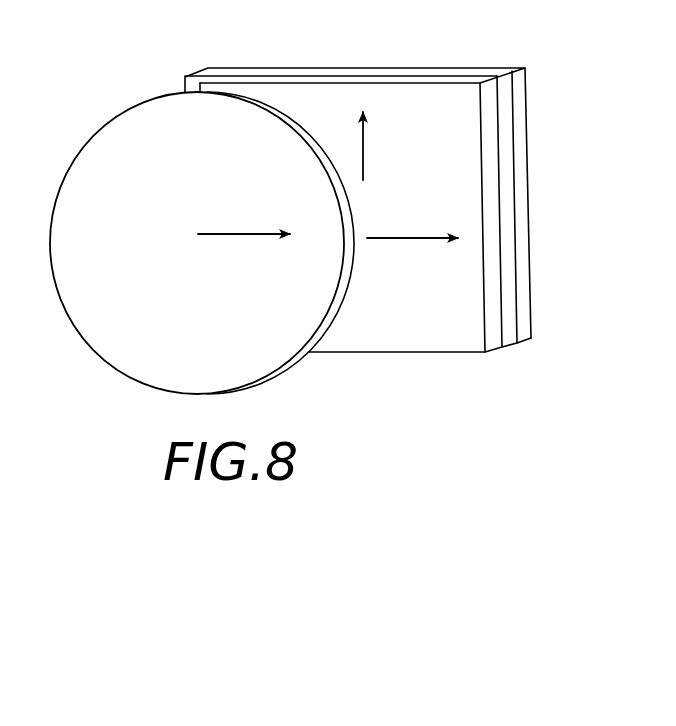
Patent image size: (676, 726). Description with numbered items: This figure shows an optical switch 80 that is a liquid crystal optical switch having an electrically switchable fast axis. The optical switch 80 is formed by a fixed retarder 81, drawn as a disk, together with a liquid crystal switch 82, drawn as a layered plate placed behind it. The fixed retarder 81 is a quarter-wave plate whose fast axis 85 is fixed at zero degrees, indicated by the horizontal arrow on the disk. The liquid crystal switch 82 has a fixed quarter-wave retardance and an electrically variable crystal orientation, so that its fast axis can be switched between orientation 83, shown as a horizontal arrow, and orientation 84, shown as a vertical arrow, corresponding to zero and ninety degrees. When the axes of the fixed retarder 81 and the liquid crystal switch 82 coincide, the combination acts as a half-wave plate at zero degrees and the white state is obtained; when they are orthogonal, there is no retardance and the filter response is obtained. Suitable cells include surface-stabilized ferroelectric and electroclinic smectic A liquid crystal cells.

The optical switch 80 is at (222, 56).
The fixed retarder 81 is at (68, 170).
The liquid crystal switch 82 is at (533, 322).
The fast axis orientation 83 is at (397, 242).
The fast axis orientation 84 is at (363, 140).
The fast axis 85 is at (248, 233).